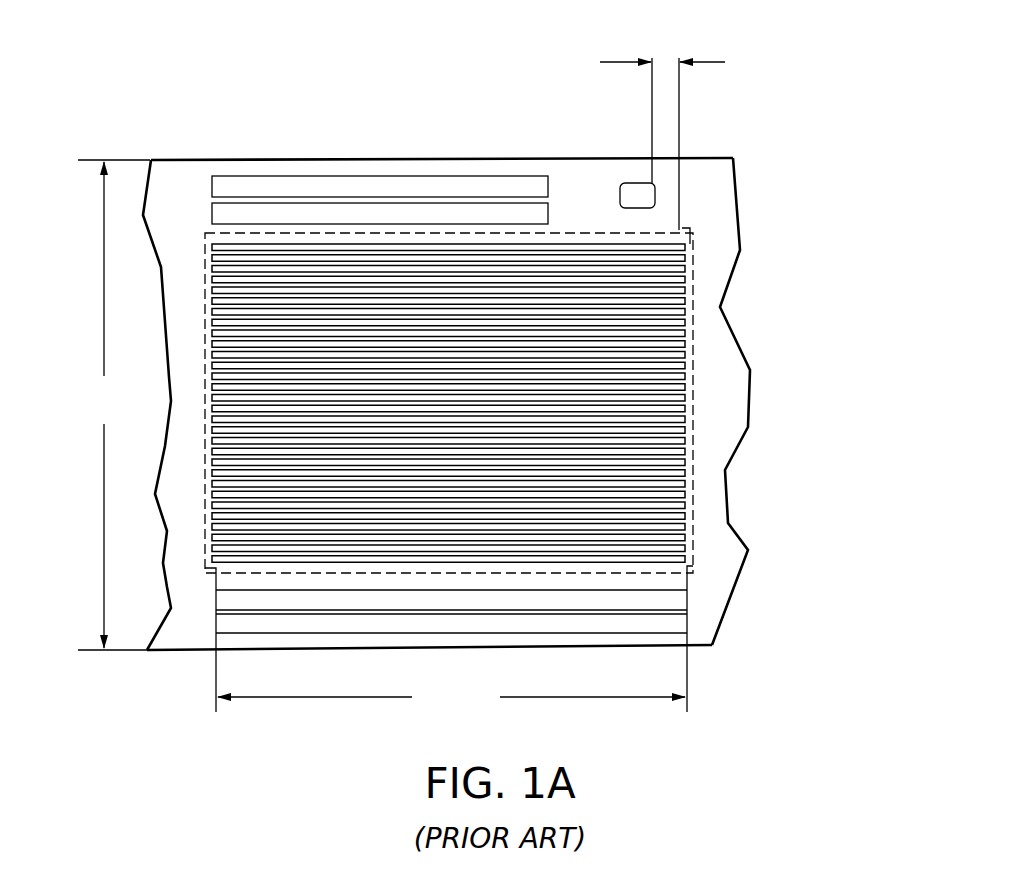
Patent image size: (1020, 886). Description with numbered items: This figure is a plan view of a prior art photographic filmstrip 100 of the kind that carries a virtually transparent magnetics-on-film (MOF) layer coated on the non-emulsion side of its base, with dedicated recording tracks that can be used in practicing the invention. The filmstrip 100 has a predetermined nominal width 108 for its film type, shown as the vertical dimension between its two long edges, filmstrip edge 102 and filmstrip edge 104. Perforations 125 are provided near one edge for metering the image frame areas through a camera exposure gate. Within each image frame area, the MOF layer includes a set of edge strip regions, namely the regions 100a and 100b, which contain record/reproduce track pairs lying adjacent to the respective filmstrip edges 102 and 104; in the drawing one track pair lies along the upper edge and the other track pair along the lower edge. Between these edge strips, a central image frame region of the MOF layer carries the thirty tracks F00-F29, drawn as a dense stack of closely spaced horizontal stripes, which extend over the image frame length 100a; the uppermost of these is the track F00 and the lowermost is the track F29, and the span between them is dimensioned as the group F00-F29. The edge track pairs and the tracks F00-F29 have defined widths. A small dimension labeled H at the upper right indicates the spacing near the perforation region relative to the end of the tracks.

The filmstrip 100 is at (240, 78).
The filmstrip edge 102 is at (178, 651).
The filmstrip edge 104 is at (440, 157).
The edge strip region / image frame length 100a is at (451, 681).
The edge strip region 100b is at (560, 165).
The nominal width 108 is at (114, 405).
The perforation 125 is at (641, 182).
The edge margin H is at (674, 141).
The track F00 is at (689, 241).
The track F29 is at (688, 560).
The tracks F00-F29 is at (690, 242).